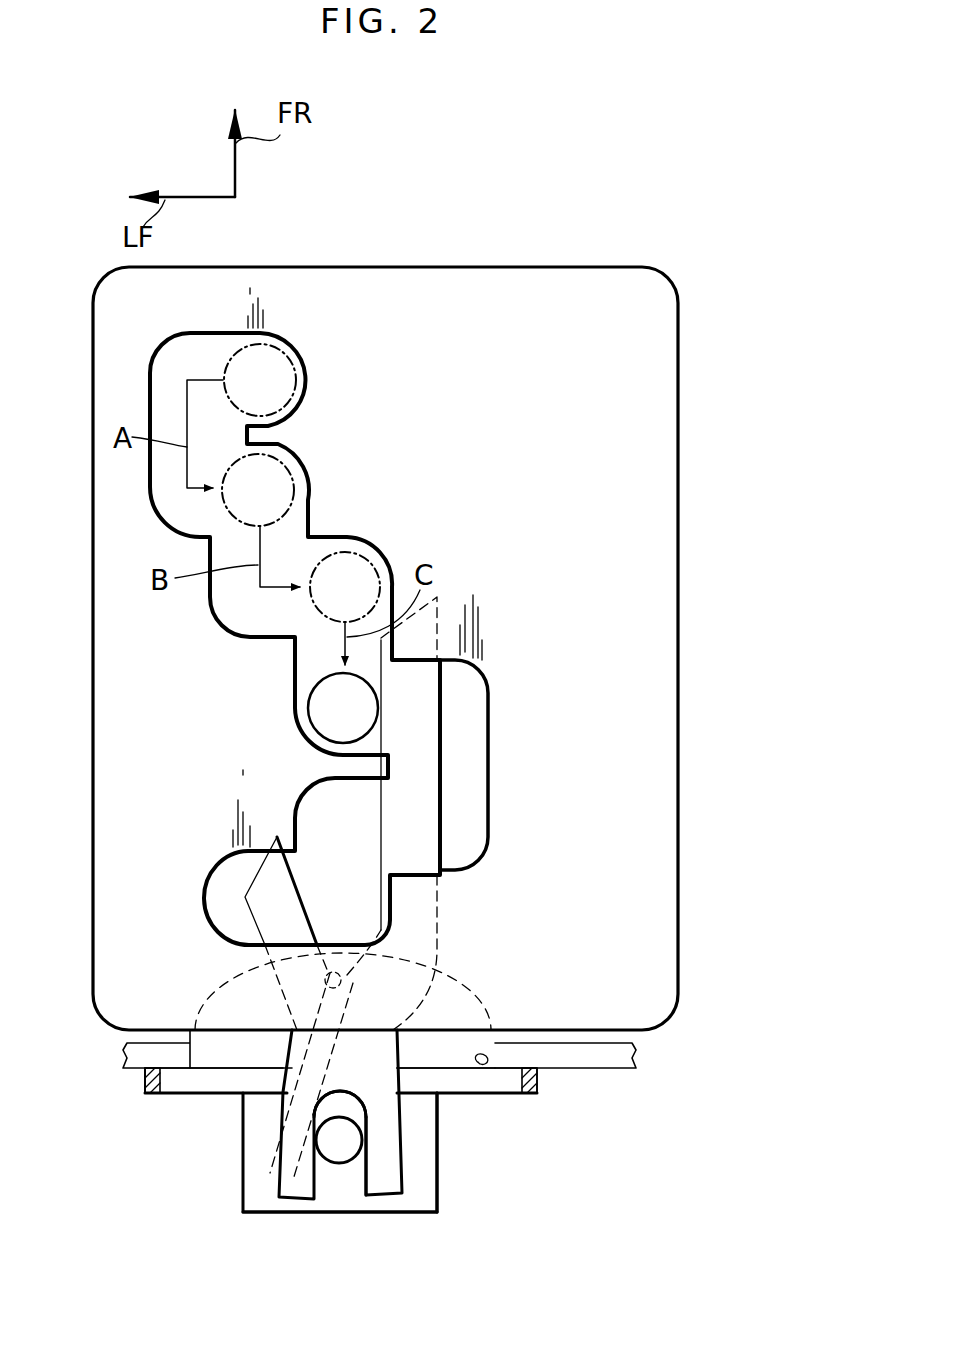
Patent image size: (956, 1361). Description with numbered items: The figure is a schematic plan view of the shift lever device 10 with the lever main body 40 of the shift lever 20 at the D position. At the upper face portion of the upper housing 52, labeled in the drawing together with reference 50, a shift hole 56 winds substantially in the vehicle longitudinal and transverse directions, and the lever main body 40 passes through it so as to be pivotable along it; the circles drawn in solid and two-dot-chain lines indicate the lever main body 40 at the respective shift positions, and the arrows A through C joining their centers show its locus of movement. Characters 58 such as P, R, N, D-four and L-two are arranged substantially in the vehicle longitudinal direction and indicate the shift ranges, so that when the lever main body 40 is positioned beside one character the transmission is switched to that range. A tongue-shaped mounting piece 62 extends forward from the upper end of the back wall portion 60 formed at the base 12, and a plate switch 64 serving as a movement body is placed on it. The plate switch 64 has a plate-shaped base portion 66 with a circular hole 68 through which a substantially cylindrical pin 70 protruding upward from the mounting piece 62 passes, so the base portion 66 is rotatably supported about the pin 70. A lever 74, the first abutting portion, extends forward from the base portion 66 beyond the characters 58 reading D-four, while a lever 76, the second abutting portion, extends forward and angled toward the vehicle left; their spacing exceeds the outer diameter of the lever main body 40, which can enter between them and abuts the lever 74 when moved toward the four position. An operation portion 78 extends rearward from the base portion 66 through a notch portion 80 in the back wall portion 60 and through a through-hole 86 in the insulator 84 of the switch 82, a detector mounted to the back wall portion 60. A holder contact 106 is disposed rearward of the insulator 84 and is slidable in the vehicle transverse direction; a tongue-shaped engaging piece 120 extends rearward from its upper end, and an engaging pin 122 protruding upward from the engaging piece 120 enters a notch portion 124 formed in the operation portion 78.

The shift lever device 10 is at (388, 244).
The upper housing 52 is at (558, 272).
The indicator 50 is at (385, 602).
The shift hole 56 is at (160, 352).
The lever main body 40 is at (350, 537).
The shift lever 20 is at (302, 543).
The characters 58 is at (558, 387).
The mounting piece 62 is at (225, 992).
The plate switch 64 is at (458, 748).
The lever 74 is at (380, 838).
The lever 76 is at (300, 900).
The back wall portion 60 is at (610, 1070).
The base 12 is at (401, 1091).
The base portion 66 is at (287, 1088).
The circular hole 68 is at (280, 1113).
The through-hole 86 is at (172, 1093).
The insulator 84 is at (176, 1097).
The notch portion 80 is at (480, 1066).
The pin 70 is at (243, 1165).
The operation portion 78 is at (383, 1185).
The switch 82 is at (455, 1198).
The holder contact 106 is at (440, 1125).
The notch portion 124 is at (317, 1180).
The engaging pin 122 is at (343, 1165).
The engaging piece 120 is at (270, 1200).